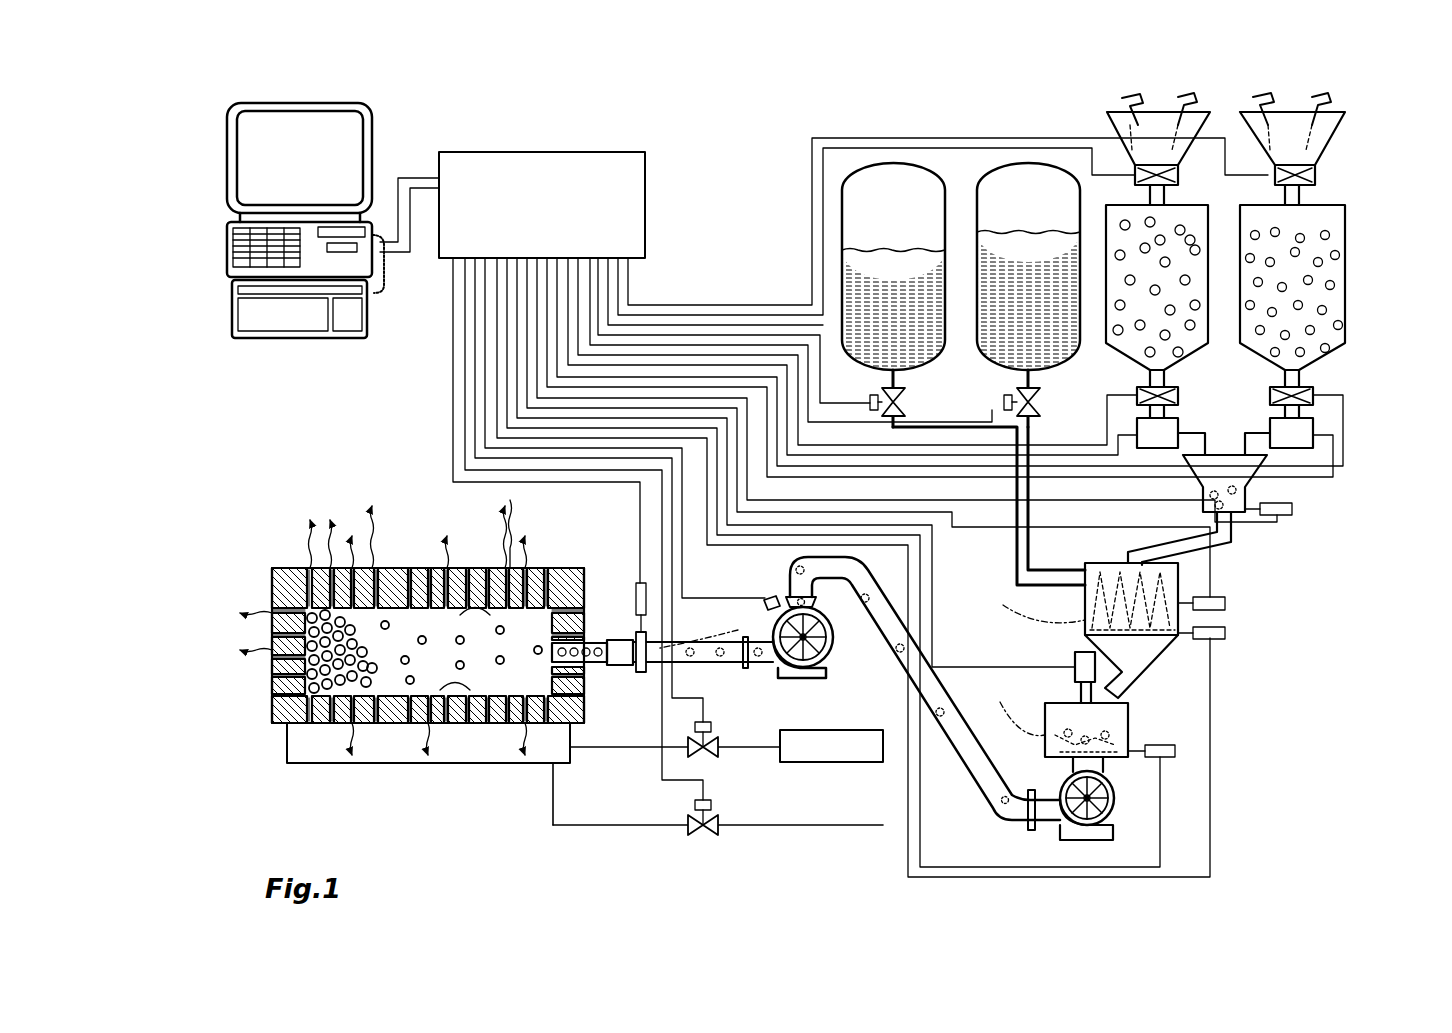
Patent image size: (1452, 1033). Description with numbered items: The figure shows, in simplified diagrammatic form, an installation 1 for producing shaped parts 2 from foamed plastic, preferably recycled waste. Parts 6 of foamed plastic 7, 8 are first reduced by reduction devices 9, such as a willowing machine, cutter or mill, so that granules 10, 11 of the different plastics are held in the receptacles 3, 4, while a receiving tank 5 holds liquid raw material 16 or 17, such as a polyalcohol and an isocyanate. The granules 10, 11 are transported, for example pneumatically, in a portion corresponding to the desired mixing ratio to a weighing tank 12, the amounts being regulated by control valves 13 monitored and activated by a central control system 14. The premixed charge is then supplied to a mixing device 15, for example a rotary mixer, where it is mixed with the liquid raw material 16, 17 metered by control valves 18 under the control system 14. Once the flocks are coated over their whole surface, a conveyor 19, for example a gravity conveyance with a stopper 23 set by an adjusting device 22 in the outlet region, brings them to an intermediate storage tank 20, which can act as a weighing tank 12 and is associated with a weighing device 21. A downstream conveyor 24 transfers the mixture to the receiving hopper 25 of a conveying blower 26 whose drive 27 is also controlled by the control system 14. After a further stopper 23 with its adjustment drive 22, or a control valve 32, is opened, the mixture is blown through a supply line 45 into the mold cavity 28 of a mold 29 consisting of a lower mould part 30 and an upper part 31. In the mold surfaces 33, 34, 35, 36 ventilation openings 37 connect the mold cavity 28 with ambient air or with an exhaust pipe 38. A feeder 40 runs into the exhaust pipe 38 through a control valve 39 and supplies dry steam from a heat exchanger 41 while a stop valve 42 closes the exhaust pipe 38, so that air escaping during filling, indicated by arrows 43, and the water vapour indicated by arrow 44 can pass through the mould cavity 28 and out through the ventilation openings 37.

The installation 1 is at (255, 435).
The shaped parts 2 is at (408, 627).
The receptacle 3 is at (1328, 222).
The receptacle 4 is at (1178, 222).
The receiving tank 5 is at (893, 200).
The parts 6 is at (1145, 95).
The foamed plastic 7 is at (1335, 248).
The foamed plastic 8 is at (1195, 235).
The reduction device 9 is at (1122, 160).
The granules 10 is at (1140, 352).
The granules 11 is at (1342, 305).
The weighing tank 12 is at (1262, 490).
The control valve 13 is at (1322, 425).
The central control system 14 is at (612, 178).
The mixing device 15 is at (1185, 573).
The liquid raw material 16 is at (862, 270).
The liquid raw material 17 is at (1003, 252).
The control valve 18 is at (870, 402).
The conveyor 19 is at (1165, 668).
The intermediate storage tank 20 is at (1135, 728).
The weighing device 21 is at (1068, 652).
The adjusting device 22 is at (1292, 510).
The stopper 23 is at (872, 660).
The conveyor 24 is at (1130, 802).
The receiving hopper 25 is at (790, 600).
The conveying blower 26 is at (852, 592).
The drive 27 is at (765, 602).
The mold cavity 28 is at (400, 640).
The mold 29 is at (268, 745).
The lower mould part 30 is at (275, 715).
The upper part 31 is at (272, 590).
The control valve 32 is at (625, 632).
The mold surface 33 is at (478, 692).
The mold surface 34 is at (300, 660).
The mold surface 35 is at (465, 612).
The mold surface 36 is at (548, 690).
The ventilation openings 37 is at (352, 695).
The exhaust pipe 38 is at (310, 765).
The control valve 39 is at (705, 745).
The feeder 40 is at (588, 750).
The heat exchanger 41 is at (842, 775).
The stop valve 42 is at (700, 835).
The arrows 43 is at (380, 545).
The arrow 44 is at (508, 540).
The supply line 45 is at (600, 668).